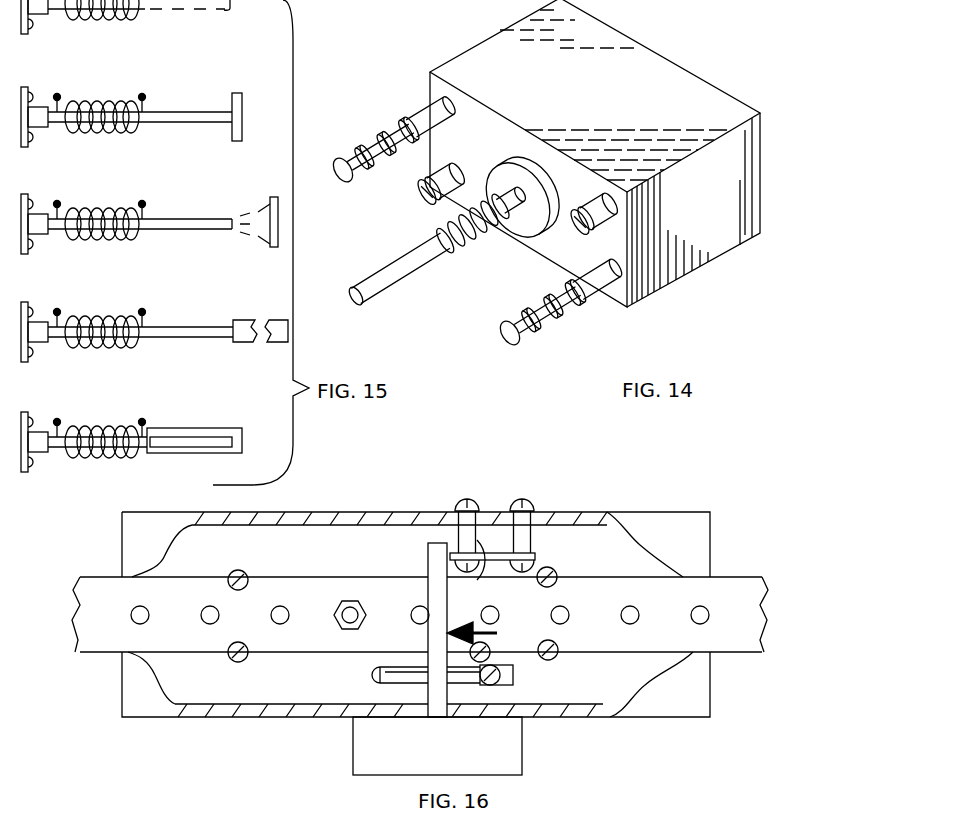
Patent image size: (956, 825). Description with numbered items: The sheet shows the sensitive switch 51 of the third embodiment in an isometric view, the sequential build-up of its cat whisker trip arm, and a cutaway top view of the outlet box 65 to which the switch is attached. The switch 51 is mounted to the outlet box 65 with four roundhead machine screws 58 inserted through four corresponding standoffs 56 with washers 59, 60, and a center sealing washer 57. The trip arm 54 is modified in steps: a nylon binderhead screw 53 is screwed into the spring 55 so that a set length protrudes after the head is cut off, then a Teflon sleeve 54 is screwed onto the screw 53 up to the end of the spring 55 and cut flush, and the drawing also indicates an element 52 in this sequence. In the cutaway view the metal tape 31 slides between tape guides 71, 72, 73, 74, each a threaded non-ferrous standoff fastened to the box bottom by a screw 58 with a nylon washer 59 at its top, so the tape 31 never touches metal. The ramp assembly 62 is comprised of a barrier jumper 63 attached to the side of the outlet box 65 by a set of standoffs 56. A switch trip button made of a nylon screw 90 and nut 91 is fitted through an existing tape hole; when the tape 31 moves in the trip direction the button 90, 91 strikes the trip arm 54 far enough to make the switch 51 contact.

In FIG. 16, the metal tape 31 is at (733, 573).
In FIG. 14, the sensitive switch 51 is at (697, 73).
In FIG. 16, the sensitive switch 51 is at (518, 740).
In FIG. 15, the actuator link 52 is at (225, 13).
In FIG. 15, the nylon binderhead screw 53 is at (232, 130).
In FIG. 14, the nylon binderhead screw 53 is at (378, 272).
In FIG. 15, the trip arm 54 is at (275, 345).
In FIG. 16, the trip arm 54 is at (427, 550).
In FIG. 15, the spring 55 is at (128, 20).
In FIG. 14, the spring 55 is at (492, 233).
In FIG. 14, the standoff 56 is at (422, 110).
In FIG. 16, the standoff 56 is at (535, 536).
In FIG. 14, the center sealing washer 57 is at (542, 157).
In FIG. 14, the roundhead machine screw 58 is at (515, 348).
In FIG. 16, the roundhead machine screw 58 is at (528, 495).
In FIG. 14, the washer 59 is at (385, 135).
In FIG. 14, the washer 60 is at (360, 145).
In FIG. 16, the washer 60 is at (533, 508).
In FIG. 16, the ramp assembly 62 is at (493, 505).
In FIG. 16, the barrier jumper 63 is at (540, 556).
In FIG. 16, the outlet box 65 is at (665, 533).
In FIG. 16, the tape guide 71 is at (247, 662).
In FIG. 16, the tape guide 72 is at (253, 546).
In FIG. 16, the tape guide 73 is at (552, 584).
In FIG. 16, the tape guide 74 is at (548, 662).
In FIG. 16, the nylon screw 90 is at (342, 628).
In FIG. 16, the nut 91 is at (338, 605).